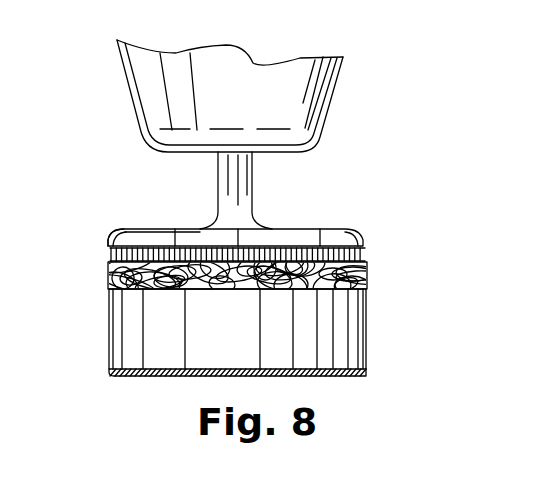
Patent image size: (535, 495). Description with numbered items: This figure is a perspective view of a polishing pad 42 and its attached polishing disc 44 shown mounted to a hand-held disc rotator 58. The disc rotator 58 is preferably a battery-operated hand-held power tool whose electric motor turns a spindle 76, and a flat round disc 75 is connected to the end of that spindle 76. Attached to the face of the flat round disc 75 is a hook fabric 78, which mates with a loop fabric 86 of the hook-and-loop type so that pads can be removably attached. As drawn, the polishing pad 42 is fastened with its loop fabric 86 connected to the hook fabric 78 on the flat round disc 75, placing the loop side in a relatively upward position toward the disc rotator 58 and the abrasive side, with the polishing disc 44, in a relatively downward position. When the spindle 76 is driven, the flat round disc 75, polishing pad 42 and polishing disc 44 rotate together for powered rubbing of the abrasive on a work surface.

The disc rotator 58 is at (333, 117).
The spindle 76 is at (257, 197).
The hook fabric 78 is at (366, 246).
The flat round disc 75 is at (112, 236).
The loop fabric 86 is at (367, 272).
The polishing pad 42 is at (367, 330).
The polishing disc 44 is at (343, 376).